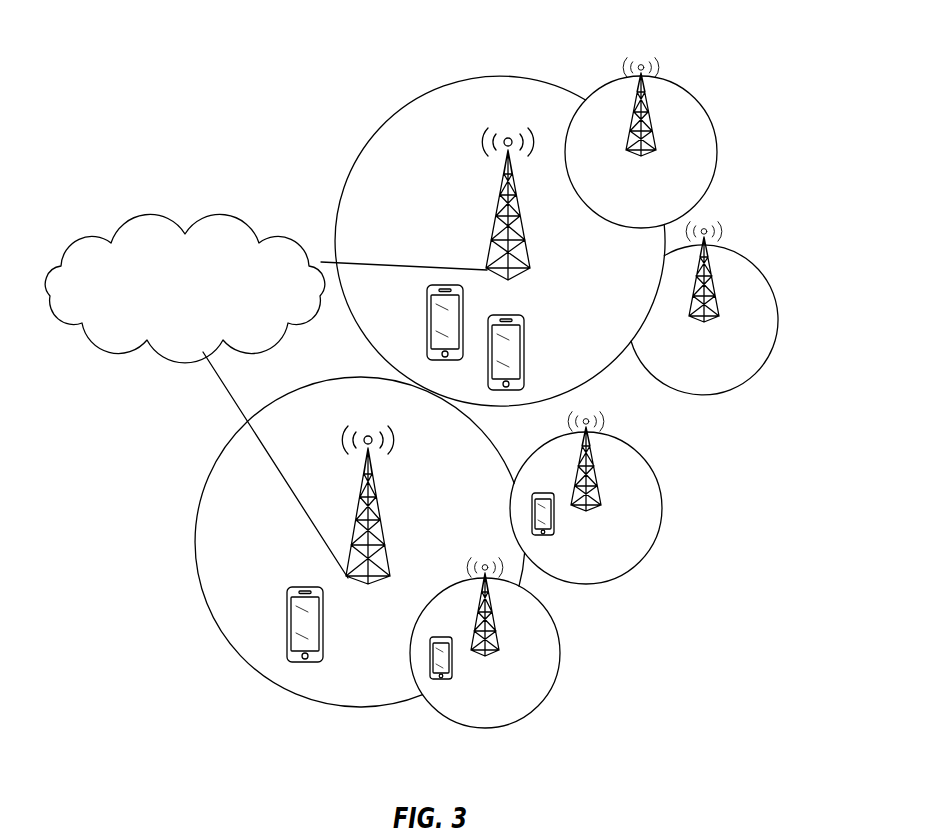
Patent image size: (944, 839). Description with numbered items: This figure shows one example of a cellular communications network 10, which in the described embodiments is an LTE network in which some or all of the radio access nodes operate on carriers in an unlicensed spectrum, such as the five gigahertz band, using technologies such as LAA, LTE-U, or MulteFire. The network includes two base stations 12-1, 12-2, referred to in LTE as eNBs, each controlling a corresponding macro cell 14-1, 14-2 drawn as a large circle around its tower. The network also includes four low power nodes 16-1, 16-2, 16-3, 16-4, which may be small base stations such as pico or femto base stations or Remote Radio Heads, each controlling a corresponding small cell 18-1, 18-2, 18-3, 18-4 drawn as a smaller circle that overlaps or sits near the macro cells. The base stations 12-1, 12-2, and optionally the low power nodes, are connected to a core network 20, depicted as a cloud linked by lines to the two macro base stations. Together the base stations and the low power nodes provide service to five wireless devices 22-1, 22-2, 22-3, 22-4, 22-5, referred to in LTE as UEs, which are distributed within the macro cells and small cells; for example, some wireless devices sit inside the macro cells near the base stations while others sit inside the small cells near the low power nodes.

The cellular communications network 10 is at (296, 78).
The core network 20 is at (105, 232).
The macro cell 14-1 is at (272, 683).
The macro cell 14-2 is at (500, 78).
The base station 12-1 is at (390, 526).
The base station 12-2 is at (492, 228).
The small cell 18-1 is at (560, 652).
The small cell 18-2 is at (662, 510).
The small cell 18-3 is at (780, 320).
The small cell 18-4 is at (718, 152).
The low power node 16-1 is at (498, 632).
The low power node 16-2 is at (600, 485).
The low power node 16-3 is at (716, 298).
The low power node 16-4 is at (652, 133).
The wireless device 22-1 is at (452, 660).
The wireless device 22-2 is at (554, 518).
The wireless device 22-3 is at (287, 597).
The wireless device 22-4 is at (427, 322).
The wireless device 22-5 is at (525, 332).